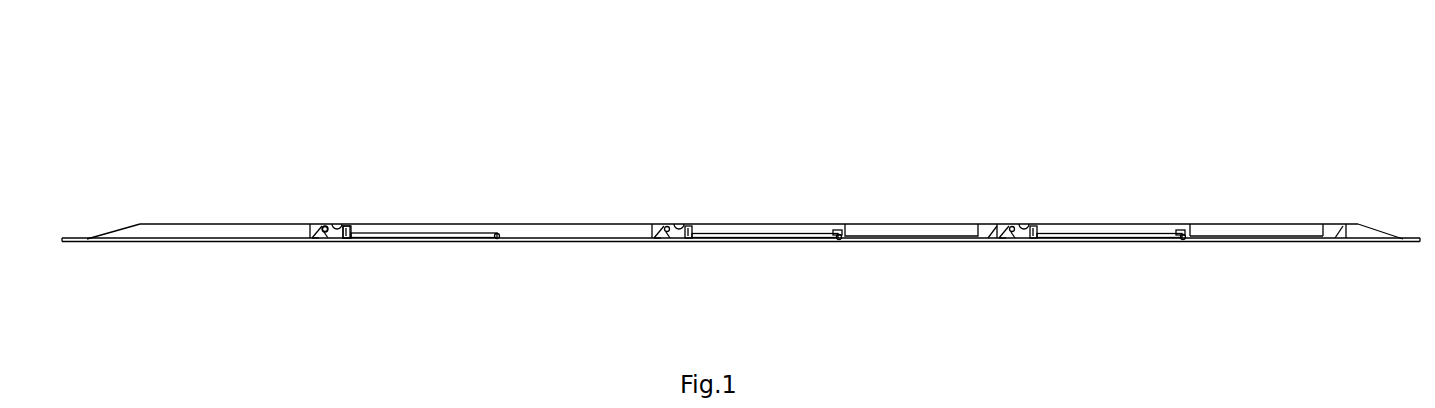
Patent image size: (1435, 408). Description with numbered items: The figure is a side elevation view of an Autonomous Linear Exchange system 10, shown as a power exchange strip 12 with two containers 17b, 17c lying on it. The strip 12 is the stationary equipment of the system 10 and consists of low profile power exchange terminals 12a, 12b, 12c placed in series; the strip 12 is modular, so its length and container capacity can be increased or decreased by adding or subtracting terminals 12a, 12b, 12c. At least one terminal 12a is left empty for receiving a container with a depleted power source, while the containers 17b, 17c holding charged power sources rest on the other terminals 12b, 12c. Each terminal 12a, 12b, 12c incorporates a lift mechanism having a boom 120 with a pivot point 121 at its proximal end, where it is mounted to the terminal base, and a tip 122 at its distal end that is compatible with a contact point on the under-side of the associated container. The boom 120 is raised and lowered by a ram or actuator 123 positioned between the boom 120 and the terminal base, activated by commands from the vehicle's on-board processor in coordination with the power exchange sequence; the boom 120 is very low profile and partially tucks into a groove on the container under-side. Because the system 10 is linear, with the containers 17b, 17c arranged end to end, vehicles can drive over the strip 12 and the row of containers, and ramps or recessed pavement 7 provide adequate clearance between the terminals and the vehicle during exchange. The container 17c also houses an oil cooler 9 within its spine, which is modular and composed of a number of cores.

The autonomous linear exchange system 10 is at (148, 146).
The ramps or recessed pavement 7 is at (258, 242).
The strip 12 is at (1218, 107).
The power exchange terminal 12a is at (347, 188).
The power exchange terminal 12b is at (777, 196).
The power exchange terminal 12c is at (1240, 185).
The pivot point 121 is at (324, 242).
The ram or actuator 123 is at (347, 225).
The boom 120 is at (406, 242).
The tip 122 is at (497, 242).
The container 17b is at (749, 242).
The container 17c is at (1097, 242).
The oil cooler 9 is at (1256, 242).